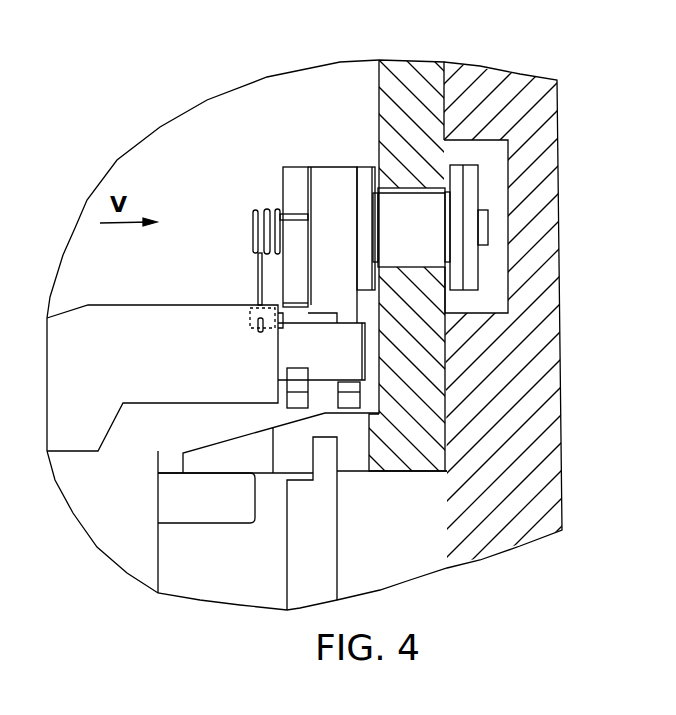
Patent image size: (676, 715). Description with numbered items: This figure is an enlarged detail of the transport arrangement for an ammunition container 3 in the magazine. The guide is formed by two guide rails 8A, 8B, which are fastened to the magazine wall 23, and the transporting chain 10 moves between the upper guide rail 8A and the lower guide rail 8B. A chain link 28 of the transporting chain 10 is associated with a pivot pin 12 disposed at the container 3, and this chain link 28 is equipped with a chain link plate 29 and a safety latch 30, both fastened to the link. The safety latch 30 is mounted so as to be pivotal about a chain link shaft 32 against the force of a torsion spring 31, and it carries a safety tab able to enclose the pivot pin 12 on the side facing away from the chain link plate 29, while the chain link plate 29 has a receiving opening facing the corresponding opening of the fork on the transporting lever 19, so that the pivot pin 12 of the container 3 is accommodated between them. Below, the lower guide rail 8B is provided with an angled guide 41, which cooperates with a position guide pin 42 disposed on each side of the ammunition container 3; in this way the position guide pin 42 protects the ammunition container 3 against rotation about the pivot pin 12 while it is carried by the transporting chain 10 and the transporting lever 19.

The ammunition container 3 is at (112, 543).
The upper guide rail 8A is at (413, 80).
The lower guide rail 8B is at (408, 453).
The transporting chain 10 is at (472, 183).
The pivot pin 12 is at (318, 361).
The transporting lever 19 is at (328, 550).
The magazine wall 23 is at (543, 235).
The chain link 28 is at (365, 173).
The chain link plate 29 is at (330, 175).
The safety latch 30 is at (293, 175).
The torsion spring 31 is at (257, 270).
The chain link shaft 32 is at (250, 222).
The angled guide 41 is at (235, 458).
The position guide pin 42 is at (226, 513).